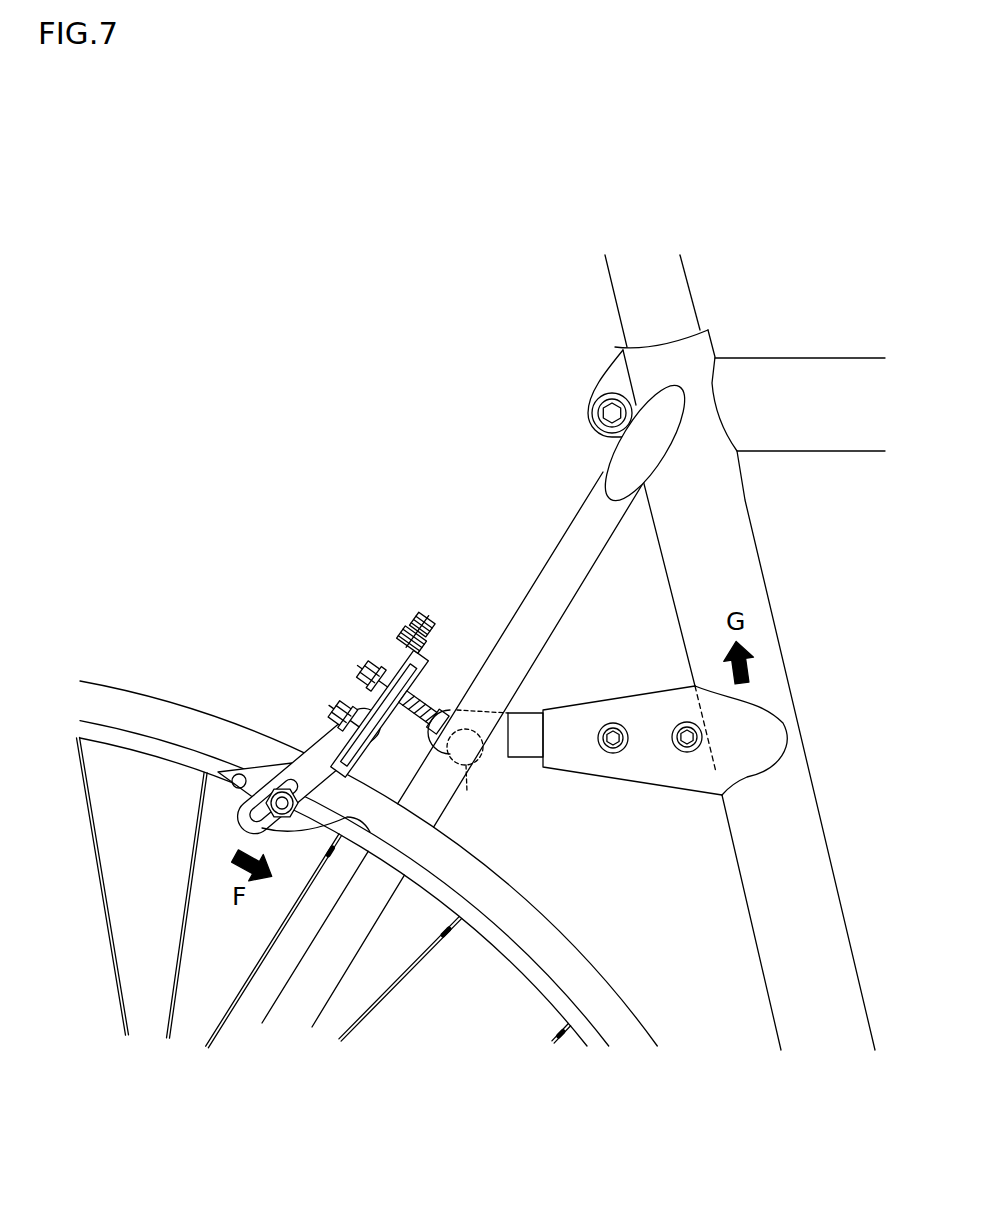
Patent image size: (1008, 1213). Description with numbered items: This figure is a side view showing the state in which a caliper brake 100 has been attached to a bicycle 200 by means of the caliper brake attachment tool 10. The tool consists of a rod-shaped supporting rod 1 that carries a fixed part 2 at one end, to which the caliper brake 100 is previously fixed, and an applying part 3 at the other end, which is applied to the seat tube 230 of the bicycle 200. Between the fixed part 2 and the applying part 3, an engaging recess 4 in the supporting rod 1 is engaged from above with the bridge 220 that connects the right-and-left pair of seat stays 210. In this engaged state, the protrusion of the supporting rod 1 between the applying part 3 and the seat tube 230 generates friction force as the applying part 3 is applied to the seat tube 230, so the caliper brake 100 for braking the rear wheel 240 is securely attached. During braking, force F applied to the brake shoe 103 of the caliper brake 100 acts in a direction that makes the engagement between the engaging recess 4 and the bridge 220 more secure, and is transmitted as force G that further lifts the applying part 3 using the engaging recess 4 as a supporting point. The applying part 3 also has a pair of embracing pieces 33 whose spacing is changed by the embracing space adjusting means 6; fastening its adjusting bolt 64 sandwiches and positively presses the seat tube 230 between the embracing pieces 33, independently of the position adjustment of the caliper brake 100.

The bicycle 200 is at (533, 373).
The seat stays 210 is at (560, 558).
The bridge 220 is at (470, 800).
The seat tube 230 is at (757, 553).
The rear wheel 240 is at (118, 690).
The caliper brake 100 is at (333, 657).
The brake shoe 103 is at (253, 775).
The supporting rod 1 is at (528, 718).
The fixed part 2 is at (450, 687).
The applying part 3 is at (715, 772).
The engaging recess 4 is at (486, 770).
The embracing space adjusting means 6 is at (686, 767).
The caliper brake attachment tool 10 is at (619, 799).
The embracing pieces 33 is at (787, 723).
The adjusting bolt 64 is at (680, 727).